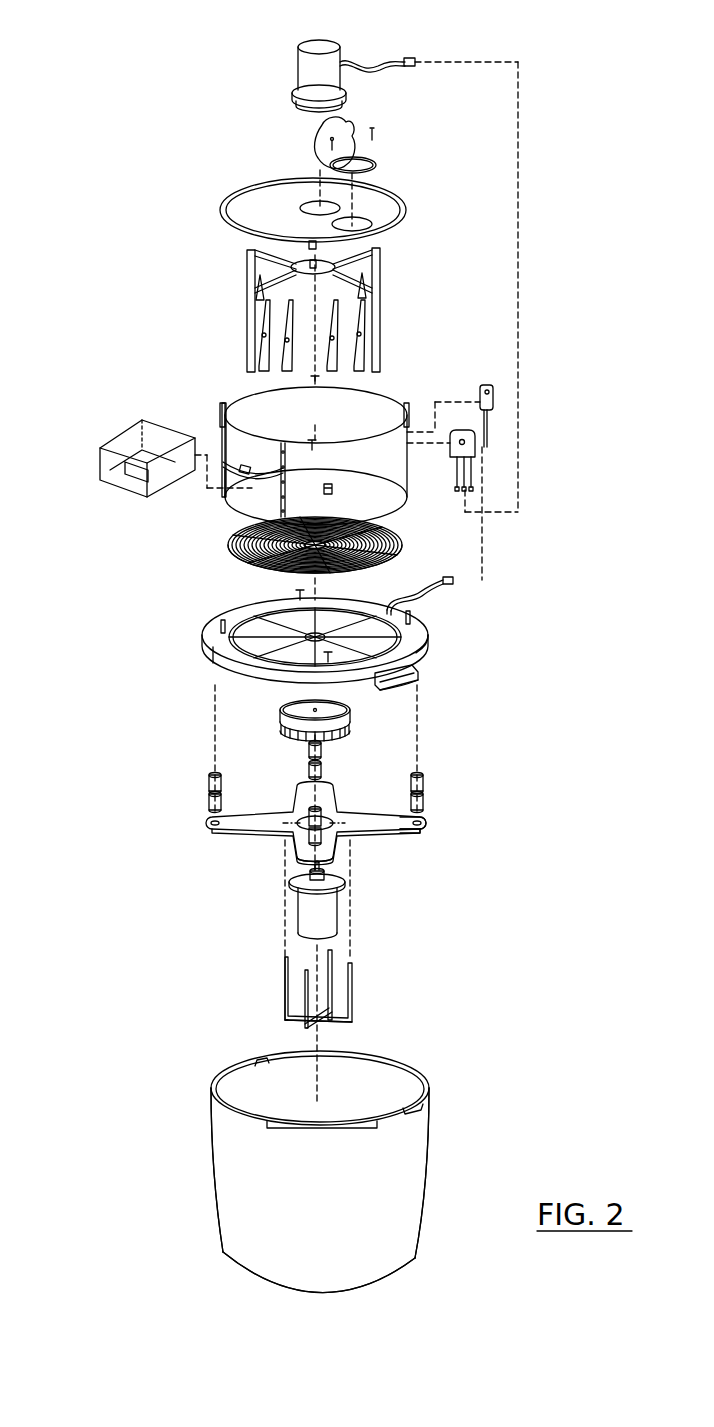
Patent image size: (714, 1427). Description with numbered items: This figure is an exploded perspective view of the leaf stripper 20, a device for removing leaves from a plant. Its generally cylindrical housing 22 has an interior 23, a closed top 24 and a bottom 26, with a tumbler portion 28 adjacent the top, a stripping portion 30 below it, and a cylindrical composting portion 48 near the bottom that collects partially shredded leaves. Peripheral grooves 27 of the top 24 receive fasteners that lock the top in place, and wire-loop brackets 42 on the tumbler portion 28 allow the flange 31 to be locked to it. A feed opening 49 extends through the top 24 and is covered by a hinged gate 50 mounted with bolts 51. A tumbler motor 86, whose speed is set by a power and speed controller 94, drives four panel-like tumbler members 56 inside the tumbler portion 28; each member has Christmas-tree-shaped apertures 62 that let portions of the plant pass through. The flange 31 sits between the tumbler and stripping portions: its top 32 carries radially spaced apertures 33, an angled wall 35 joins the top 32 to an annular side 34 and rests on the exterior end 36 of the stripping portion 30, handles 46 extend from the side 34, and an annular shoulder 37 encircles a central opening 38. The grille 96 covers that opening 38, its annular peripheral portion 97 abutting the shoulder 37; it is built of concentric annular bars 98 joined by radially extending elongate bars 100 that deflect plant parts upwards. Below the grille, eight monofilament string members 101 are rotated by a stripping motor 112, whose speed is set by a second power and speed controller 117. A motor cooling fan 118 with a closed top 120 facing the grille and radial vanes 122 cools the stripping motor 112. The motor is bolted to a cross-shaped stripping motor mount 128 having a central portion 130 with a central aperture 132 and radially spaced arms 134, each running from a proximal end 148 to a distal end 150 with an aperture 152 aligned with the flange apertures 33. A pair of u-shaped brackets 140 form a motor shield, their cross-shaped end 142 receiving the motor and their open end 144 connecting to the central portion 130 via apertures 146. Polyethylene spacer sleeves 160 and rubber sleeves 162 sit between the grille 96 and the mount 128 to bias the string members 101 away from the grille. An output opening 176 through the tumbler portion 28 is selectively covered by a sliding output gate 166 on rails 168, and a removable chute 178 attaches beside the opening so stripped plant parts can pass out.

The leaf stripper 20 is at (88, 238).
The housing 22 is at (177, 1164).
The interior 23 is at (246, 412).
The closed top 24 is at (256, 200).
The bottom 26 is at (383, 1278).
The peripheral grooves 27 is at (311, 245).
The tumbler portion 28 is at (383, 488).
The stripping portion 30 is at (412, 1178).
The flange 31 is at (193, 654).
The top of flange 32 is at (420, 662).
The apertures 33 is at (418, 630).
The annular side 34 is at (410, 677).
The angled wall 35 is at (425, 640).
The exterior end 36 is at (430, 1072).
The annular shoulder 37 is at (238, 640).
The central opening 38 is at (217, 632).
The brackets 42 is at (334, 488).
The handles 46 is at (403, 682).
The composting portion 48 is at (237, 1240).
The feed opening 49 is at (367, 223).
The hinged gate 50 is at (350, 125).
The bolts 51 is at (378, 133).
The tumbler members 56 is at (368, 305).
The apertures 62 is at (365, 348).
The tumbler motor 86 is at (315, 48).
The power and speed controller 94 is at (477, 453).
The grille 96 is at (230, 547).
The annular peripheral portion 97 is at (258, 570).
The annular bars 98 is at (397, 542).
The elongate bars 100 is at (393, 565).
The string members 101 is at (343, 630).
The stripping motor 112 is at (312, 922).
The power and speed controller 117 is at (493, 400).
The motor cooling fan 118 is at (362, 710).
The closed top 120 is at (285, 705).
The vanes 122 is at (342, 730).
The stripping motor mount 128 is at (370, 836).
The central portion 130 is at (292, 815).
The aperture 132 is at (333, 812).
The arms 134 is at (423, 787).
The u-shaped brackets 140 is at (353, 1000).
The cross-shaped end 142 is at (328, 1032).
The open end 144 is at (276, 955).
The apertures 146 is at (283, 825).
The proximal end 148 is at (353, 834).
The distal end 150 is at (422, 827).
The aperture 152 is at (422, 822).
The spacer sleeves 160 is at (208, 802).
The rubber sleeves 162 is at (208, 780).
The output gate 166 is at (226, 466).
The rails 168 is at (278, 500).
The output opening 176 is at (243, 498).
The chute 178 is at (108, 467).